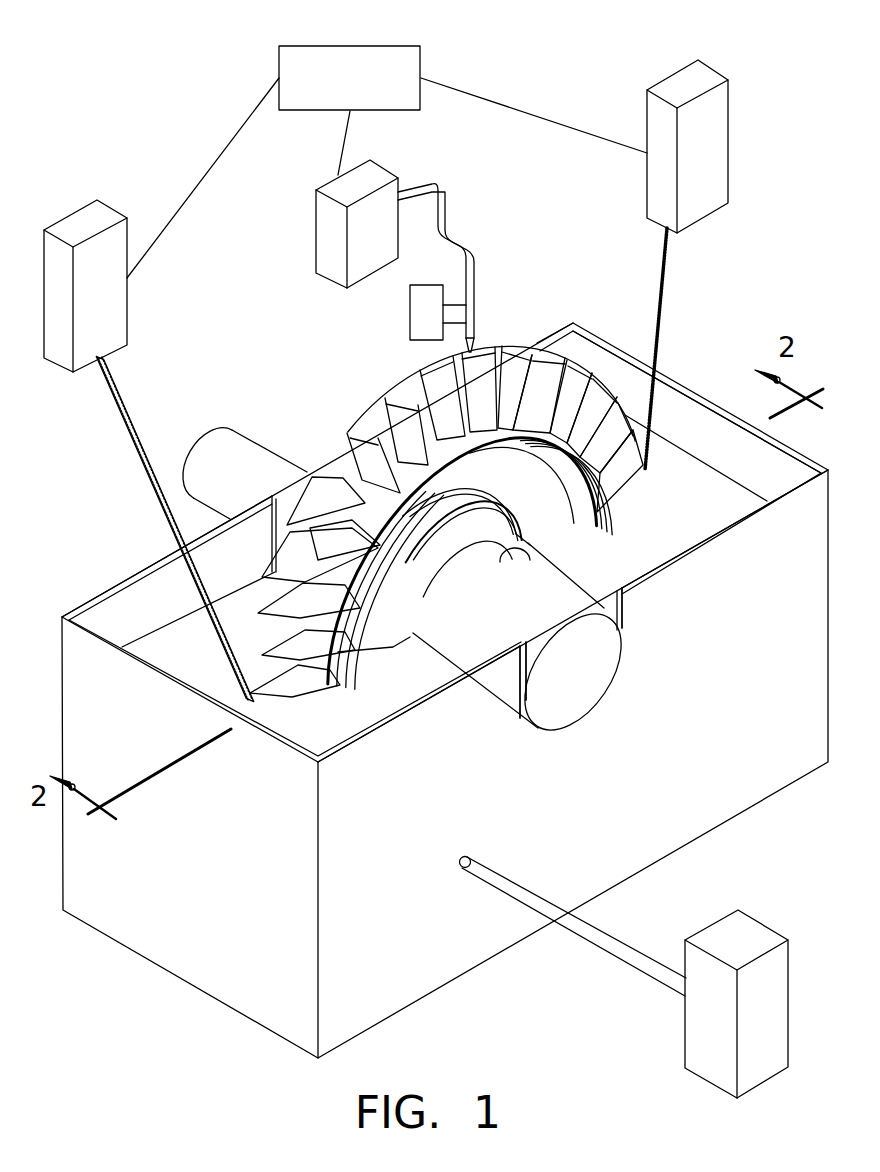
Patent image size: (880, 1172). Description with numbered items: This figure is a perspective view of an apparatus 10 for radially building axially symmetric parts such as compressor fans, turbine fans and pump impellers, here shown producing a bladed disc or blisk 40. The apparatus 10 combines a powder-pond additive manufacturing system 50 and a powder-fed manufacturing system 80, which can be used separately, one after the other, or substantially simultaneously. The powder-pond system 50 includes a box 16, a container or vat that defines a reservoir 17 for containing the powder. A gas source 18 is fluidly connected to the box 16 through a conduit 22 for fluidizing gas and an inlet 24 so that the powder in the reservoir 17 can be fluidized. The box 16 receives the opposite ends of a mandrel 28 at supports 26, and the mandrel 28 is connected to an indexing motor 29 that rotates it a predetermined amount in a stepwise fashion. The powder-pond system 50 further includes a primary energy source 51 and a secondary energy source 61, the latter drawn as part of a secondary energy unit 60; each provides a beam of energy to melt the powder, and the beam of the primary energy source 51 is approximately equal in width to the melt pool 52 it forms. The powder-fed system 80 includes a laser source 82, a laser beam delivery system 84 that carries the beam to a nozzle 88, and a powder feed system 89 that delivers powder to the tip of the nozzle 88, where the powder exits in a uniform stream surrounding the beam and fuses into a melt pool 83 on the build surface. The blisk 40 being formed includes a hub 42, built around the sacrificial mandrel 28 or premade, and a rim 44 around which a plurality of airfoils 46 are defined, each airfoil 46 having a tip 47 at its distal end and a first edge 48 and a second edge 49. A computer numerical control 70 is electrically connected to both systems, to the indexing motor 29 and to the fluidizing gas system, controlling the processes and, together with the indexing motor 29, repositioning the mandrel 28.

The apparatus 10 is at (162, 88).
The box 16 is at (190, 951).
The reservoir 17 is at (665, 405).
The gas source 18 is at (735, 935).
The conduit 22 is at (488, 872).
The inlet 24 is at (462, 868).
The supports 26 is at (528, 702).
The mandrel 28 is at (577, 670).
The indexing motor 29 is at (224, 464).
The blisk 40 is at (443, 469).
The hub 42 is at (525, 556).
The rim 44 is at (598, 516).
The airfoils 46 is at (282, 580).
The tip 47 is at (270, 566).
The first edge 48 is at (277, 584).
The second edge 49 is at (347, 443).
The powder-pond additive manufacturing system 50 is at (115, 257).
The primary energy source 51 is at (107, 292).
The melt pool 52 is at (252, 698).
The second sensor system 60 is at (689, 242).
The secondary energy source 61 is at (703, 130).
The computer numerical control 70 is at (424, 67).
The powder-fed manufacturing system 80 is at (394, 247).
The laser source 82 is at (330, 240).
The melt pool 83 is at (477, 350).
The laser beam delivery system 84 is at (434, 190).
The nozzle 88 is at (473, 350).
The powder feed system 89 is at (410, 312).